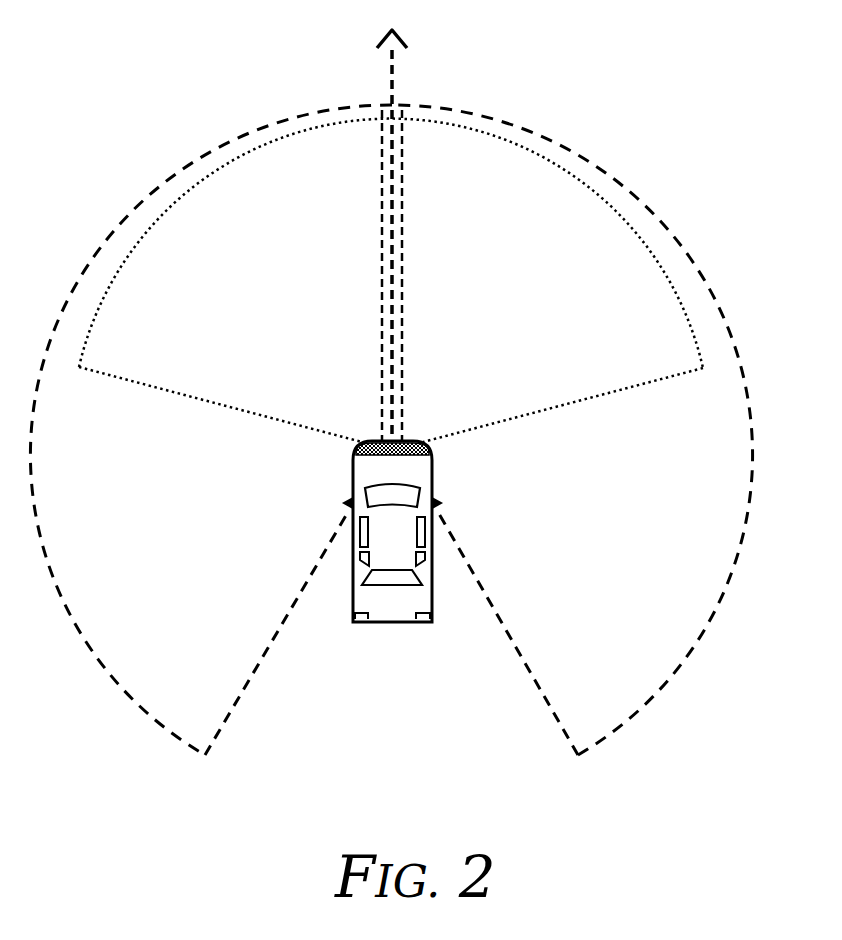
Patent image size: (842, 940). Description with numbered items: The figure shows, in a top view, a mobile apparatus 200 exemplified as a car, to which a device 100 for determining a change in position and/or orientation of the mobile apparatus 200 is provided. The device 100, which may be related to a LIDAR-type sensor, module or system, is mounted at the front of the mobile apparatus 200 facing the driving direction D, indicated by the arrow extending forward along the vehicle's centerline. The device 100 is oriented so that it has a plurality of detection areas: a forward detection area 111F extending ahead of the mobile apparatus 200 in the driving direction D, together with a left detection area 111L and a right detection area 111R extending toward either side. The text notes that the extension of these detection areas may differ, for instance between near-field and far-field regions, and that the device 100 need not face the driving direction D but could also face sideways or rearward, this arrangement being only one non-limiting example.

The device 100 is at (423, 452).
The mobile apparatus 200 is at (408, 621).
The forward detection area 111F is at (160, 352).
The left detection area 111L is at (234, 697).
The right detection area 111R is at (606, 696).
The driving direction D is at (392, 78).